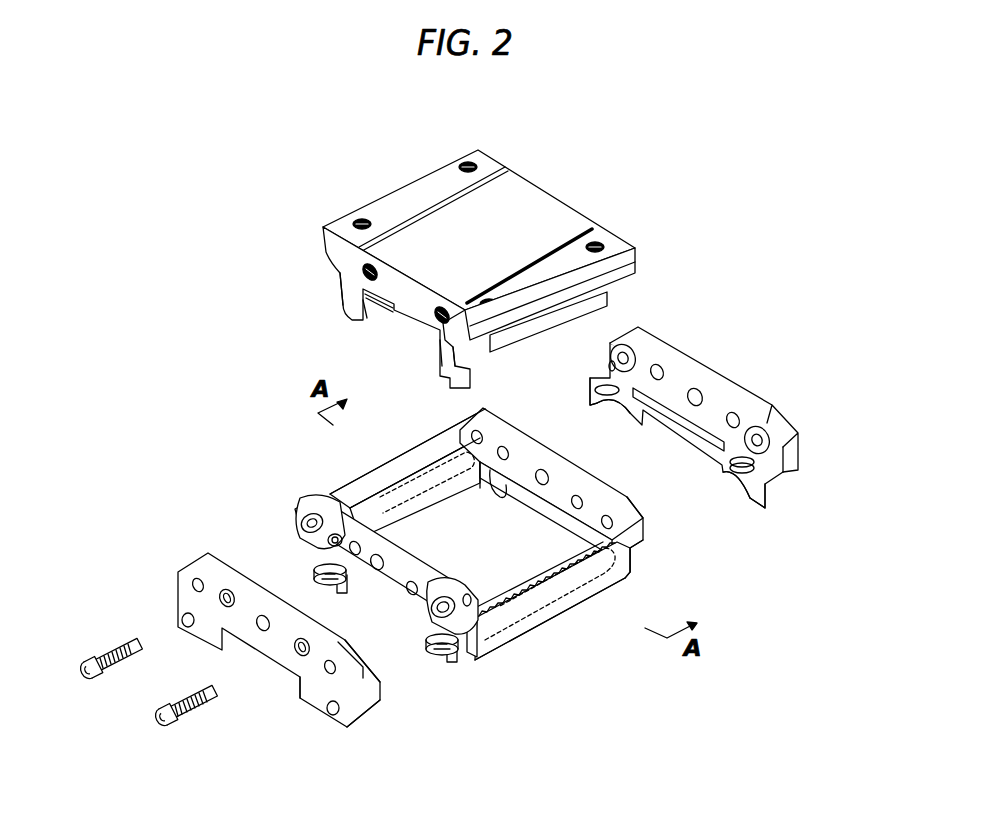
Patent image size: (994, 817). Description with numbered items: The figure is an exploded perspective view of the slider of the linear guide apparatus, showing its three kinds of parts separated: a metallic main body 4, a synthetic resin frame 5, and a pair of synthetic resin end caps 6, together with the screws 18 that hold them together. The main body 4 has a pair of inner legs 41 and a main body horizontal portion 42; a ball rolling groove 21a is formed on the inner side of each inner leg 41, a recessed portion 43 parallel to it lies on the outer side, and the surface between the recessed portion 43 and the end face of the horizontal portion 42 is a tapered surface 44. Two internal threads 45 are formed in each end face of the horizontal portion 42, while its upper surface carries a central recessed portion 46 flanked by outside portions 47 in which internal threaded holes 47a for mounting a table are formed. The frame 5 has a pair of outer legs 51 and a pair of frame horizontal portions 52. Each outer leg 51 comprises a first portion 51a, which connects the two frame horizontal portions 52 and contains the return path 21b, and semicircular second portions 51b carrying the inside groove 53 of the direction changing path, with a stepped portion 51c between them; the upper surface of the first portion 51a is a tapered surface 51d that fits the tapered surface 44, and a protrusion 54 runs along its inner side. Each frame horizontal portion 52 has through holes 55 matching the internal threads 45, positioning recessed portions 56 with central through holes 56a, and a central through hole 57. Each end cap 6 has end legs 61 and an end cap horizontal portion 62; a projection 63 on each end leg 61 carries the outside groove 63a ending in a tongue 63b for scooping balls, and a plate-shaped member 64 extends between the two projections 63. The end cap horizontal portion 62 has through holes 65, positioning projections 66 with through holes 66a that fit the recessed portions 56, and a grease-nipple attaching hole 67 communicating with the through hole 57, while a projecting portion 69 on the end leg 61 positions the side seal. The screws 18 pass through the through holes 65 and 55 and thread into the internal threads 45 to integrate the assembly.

The main body 4 is at (468, 267).
The inner leg 41 is at (340, 308).
The main body horizontal portion 42 is at (336, 242).
The recessed portion 43 is at (343, 291).
The tapered surface 44 is at (330, 259).
The internal thread 45 is at (362, 273).
The recessed portion 46 is at (523, 198).
The outside portion 47 is at (420, 186).
The internal threaded hole 47a is at (466, 161).
The ball rolling groove 21a is at (369, 322).
The return path 21b is at (420, 538).
The frame 5 is at (466, 551).
The outer leg 51 is at (489, 553).
The first portion 51a is at (537, 635).
The second portion 51b is at (318, 580).
The stepped portion 51c is at (637, 557).
The tapered surface 51d is at (420, 462).
The frame horizontal portion 52 is at (608, 488).
The inside groove 53 is at (331, 586).
The protrusion 54 is at (437, 494).
The through hole 55 is at (350, 542).
The recessed portion 56 is at (305, 516).
The through hole 56a is at (293, 524).
The through hole 57 is at (377, 572).
The end cap 6 is at (487, 532).
The end leg 61 is at (795, 470).
The end cap horizontal portion 62 is at (722, 382).
The projection 63 is at (607, 378).
The outside groove 63a is at (738, 480).
The tongue 63b is at (723, 473).
The plate-shaped member 64 is at (707, 428).
The through hole 65 is at (660, 365).
The projection 66 is at (628, 345).
The through hole 66a is at (607, 372).
The through hole 67 is at (697, 389).
The projecting portion 69 is at (182, 618).
The screw 18 is at (100, 655).